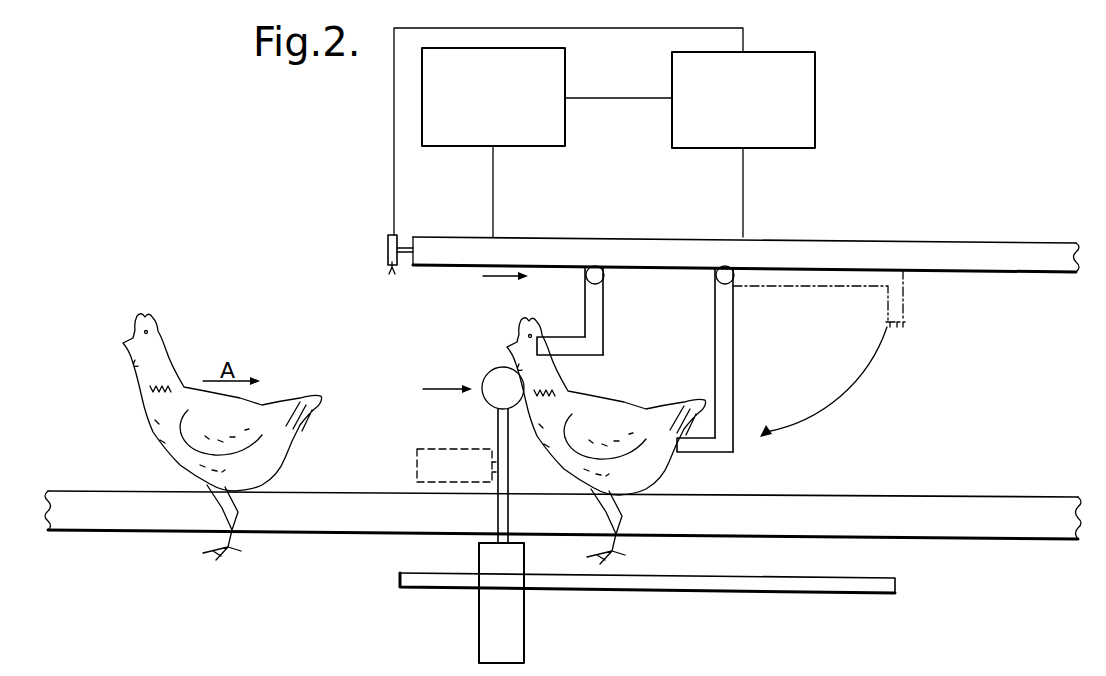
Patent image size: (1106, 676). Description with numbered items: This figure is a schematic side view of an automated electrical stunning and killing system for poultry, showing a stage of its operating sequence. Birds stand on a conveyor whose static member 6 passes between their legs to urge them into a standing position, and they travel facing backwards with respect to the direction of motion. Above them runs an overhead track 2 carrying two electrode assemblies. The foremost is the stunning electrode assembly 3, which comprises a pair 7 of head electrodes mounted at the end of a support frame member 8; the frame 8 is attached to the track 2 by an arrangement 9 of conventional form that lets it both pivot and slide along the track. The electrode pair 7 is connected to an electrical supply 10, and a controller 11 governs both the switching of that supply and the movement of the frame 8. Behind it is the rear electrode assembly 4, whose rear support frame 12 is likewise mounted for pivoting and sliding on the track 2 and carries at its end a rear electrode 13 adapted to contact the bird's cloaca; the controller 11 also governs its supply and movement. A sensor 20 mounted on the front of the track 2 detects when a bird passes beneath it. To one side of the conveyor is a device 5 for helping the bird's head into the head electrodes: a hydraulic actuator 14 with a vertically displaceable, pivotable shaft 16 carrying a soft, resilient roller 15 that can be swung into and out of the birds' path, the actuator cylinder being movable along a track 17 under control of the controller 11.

The overhead track 2 is at (578, 248).
The stunning electrode assembly 3 is at (574, 329).
The rear electrode assembly 4 is at (791, 378).
The device for assisting the bird's head into contact with head electrodes 5 is at (503, 502).
The static member 6 is at (875, 513).
The pair of electrodes 7 is at (573, 345).
The support frame member 8 is at (597, 318).
The arrangement 9 is at (601, 273).
The electrical supply 10 is at (453, 112).
The controller 11 is at (770, 122).
The rear support frame 12 is at (728, 303).
The rear electrode 13 is at (705, 448).
The hydraulic actuator 14 is at (510, 625).
The roller 15 is at (498, 378).
The shaft 16 is at (500, 445).
The track 17 is at (790, 585).
The sensor 20 is at (387, 233).